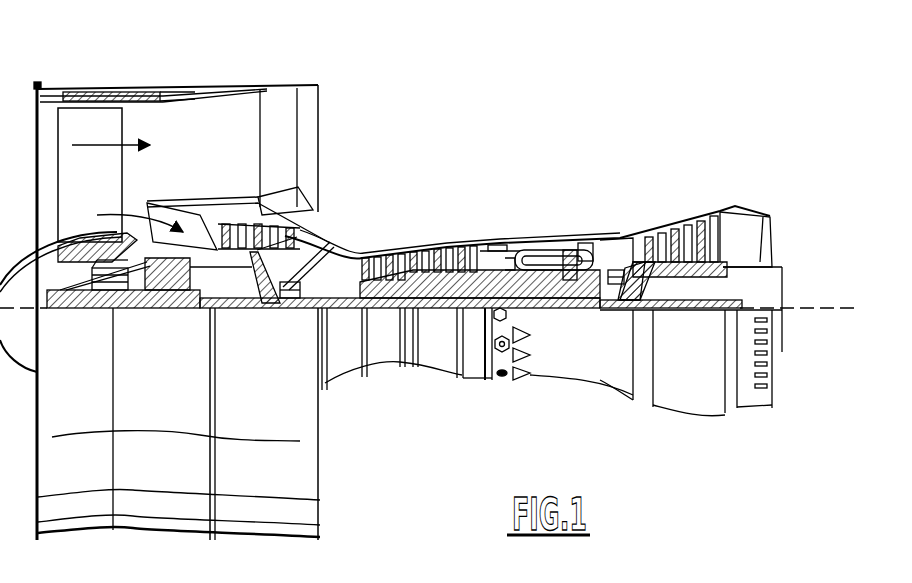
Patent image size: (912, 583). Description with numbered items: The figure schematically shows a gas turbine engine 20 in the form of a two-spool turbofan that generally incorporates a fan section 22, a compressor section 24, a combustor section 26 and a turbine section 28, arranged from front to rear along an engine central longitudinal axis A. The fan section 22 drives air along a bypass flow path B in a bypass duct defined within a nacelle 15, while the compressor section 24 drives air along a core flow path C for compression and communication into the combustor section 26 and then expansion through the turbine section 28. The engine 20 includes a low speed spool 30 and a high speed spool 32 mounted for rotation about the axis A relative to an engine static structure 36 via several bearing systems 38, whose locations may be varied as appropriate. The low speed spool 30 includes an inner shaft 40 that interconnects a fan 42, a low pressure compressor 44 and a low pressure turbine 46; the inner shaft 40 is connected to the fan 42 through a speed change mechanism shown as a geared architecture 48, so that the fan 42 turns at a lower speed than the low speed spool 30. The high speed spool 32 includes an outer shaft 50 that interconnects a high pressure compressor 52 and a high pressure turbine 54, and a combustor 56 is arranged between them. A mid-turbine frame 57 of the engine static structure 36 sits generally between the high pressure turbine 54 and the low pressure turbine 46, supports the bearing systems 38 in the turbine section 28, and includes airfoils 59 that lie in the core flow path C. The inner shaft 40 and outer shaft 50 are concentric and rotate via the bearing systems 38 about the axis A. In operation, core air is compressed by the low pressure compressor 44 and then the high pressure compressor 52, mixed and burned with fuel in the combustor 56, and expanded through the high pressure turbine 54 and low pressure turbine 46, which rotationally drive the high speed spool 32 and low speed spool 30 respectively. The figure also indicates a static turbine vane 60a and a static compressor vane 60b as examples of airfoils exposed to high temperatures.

The gas turbine engine 20 is at (541, 124).
The fan section 22 is at (121, 62).
The nacelle 15 is at (177, 92).
The fan 42 is at (105, 191).
The low pressure compressor 44 is at (268, 214).
The compressor section 24 is at (350, 224).
The compressor vane 60b is at (458, 252).
The high pressure compressor 52 is at (416, 262).
The high speed spool 32 is at (478, 256).
The combustor section 26 is at (535, 230).
The combustor 56 is at (541, 262).
The high pressure turbine 54 is at (590, 245).
The mid-turbine frame 57 is at (630, 245).
The turbine vane 60a is at (641, 235).
The turbine section 28 is at (648, 197).
The low pressure turbine 46 is at (683, 212).
The airfoils 59 is at (640, 288).
The bearing systems 38 is at (292, 298).
The outer shaft 50 is at (540, 308).
The geared architecture 48 is at (183, 292).
The inner shaft 40 is at (335, 312).
The low speed spool 30 is at (442, 316).
The engine static structure 36 is at (476, 378).
The engine central longitudinal axis A is at (852, 282).
The bypass flow path B is at (100, 145).
The core flow path C is at (131, 214).